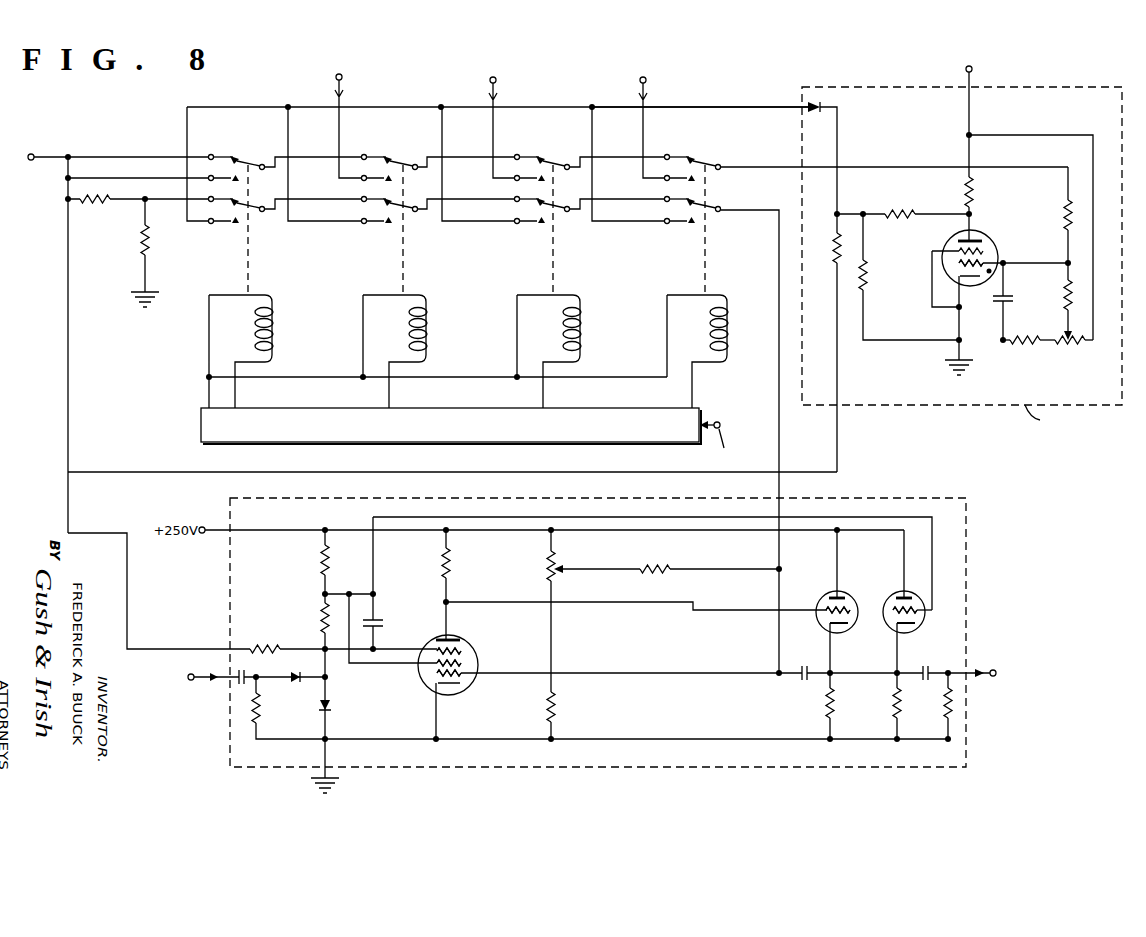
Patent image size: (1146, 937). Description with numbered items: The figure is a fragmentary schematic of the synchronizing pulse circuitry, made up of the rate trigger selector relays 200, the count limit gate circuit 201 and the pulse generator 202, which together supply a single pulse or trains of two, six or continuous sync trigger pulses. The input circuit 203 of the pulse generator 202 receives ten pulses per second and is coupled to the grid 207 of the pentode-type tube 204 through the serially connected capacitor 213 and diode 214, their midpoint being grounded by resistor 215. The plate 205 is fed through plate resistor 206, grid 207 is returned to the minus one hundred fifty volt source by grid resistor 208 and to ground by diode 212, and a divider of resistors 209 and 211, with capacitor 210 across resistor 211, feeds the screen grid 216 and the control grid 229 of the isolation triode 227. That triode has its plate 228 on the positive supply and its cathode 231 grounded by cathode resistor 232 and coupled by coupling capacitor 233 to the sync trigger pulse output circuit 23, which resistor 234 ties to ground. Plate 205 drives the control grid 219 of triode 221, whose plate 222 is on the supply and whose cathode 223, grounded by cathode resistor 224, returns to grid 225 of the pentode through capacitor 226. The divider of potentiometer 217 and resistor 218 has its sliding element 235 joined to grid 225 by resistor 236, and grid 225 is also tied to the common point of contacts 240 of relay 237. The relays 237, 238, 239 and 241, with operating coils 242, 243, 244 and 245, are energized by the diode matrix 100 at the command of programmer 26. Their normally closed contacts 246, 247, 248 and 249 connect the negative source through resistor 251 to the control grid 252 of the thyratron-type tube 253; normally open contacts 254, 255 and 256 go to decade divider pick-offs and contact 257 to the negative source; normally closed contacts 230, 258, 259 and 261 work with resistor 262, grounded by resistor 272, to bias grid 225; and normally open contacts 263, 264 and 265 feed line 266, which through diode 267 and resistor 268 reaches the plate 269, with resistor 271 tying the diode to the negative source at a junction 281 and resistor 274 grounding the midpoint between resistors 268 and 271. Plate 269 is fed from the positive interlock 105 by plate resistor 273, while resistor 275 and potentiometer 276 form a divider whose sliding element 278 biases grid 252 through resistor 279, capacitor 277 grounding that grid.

The sync trigger pulse output circuit 23 is at (994, 668).
The programmer 26 is at (720, 422).
The diode matrix 100 is at (554, 444).
The positive 250 volt interlock 105 is at (973, 73).
The rate trigger selector relays 200 is at (172, 350).
The count limit gate circuit 201 is at (1065, 88).
The pulse generator 202 is at (985, 549).
The input circuit 203 is at (191, 682).
The pentode-type tube 204 is at (455, 638).
The plate 205 is at (439, 637).
The plate resistor 206 is at (452, 562).
The grid 207 is at (462, 652).
The grid resistor 208 is at (266, 645).
The resistor 209 is at (322, 546).
The capacitor 210 is at (380, 622).
The resistor 211 is at (322, 605).
The diode 212 is at (333, 705).
The capacitor 213 is at (246, 672).
The diode 214 is at (295, 682).
The resistor 215 is at (260, 705).
The screen grid 216 is at (462, 664).
The potentiometer 217 is at (544, 569).
The resistor 218 is at (556, 708).
The control grid 219 is at (824, 612).
The triode 221 is at (841, 594).
The plate 222 is at (828, 595).
The cathode 223 is at (840, 626).
The cathode resistor 224 is at (825, 700).
The grid 225 is at (436, 674).
The capacitor 226 is at (800, 667).
The triode 227 is at (897, 594).
The plate 228 is at (910, 594).
The control grid 229 is at (917, 611).
The normally closed contacts 230 is at (711, 207).
The cathode 231 is at (904, 628).
The cathode resistor 232 is at (893, 707).
The coupling capacitor 233 is at (928, 665).
The resistor 234 is at (944, 705).
The sliding element 235 is at (562, 565).
The resistor 236 is at (665, 566).
The relay 237 is at (764, 293).
The relay 238 is at (616, 293).
The relay 239 is at (461, 293).
The contacts 240 is at (691, 211).
The relay 241 is at (306, 293).
The operating coil 242 is at (730, 328).
The operating coil 243 is at (582, 328).
The operating coil 244 is at (428, 328).
The operating coil 245 is at (274, 326).
The normally closed contacts 246 is at (711, 164).
The normally closed contacts 247 is at (553, 164).
The normally closed contacts 248 is at (399, 164).
The normally closed contacts 249 is at (245, 164).
The resistor 251 is at (1064, 212).
The control grid 252 is at (987, 262).
The thyratron-type tube 253 is at (983, 236).
The normally open contact 254 is at (691, 168).
The normally open contact 255 is at (541, 168).
The normally open contact 256 is at (388, 168).
The normally open contact 257 is at (236, 168).
The normally closed contacts 258 is at (553, 207).
The normally closed contacts 259 is at (399, 207).
The normally closed contacts 261 is at (245, 207).
The resistor 262 is at (101, 205).
The normally open contacts 263 is at (541, 211).
The normally open contacts 264 is at (388, 211).
The normally open contacts 265 is at (236, 211).
The line 266 is at (686, 107).
The diode 267 is at (824, 103).
The resistor 268 is at (905, 213).
The plate 269 is at (958, 242).
The resistor 271 is at (832, 243).
The resistor 272 is at (142, 243).
The plate resistor 273 is at (966, 184).
The resistor 274 is at (867, 278).
The resistor 275 is at (1032, 346).
The potentiometer 276 is at (1070, 346).
The capacitor 277 is at (1012, 296).
The sliding element 278 is at (1066, 332).
The resistor 279 is at (1064, 296).
The junction 281 is at (840, 210).